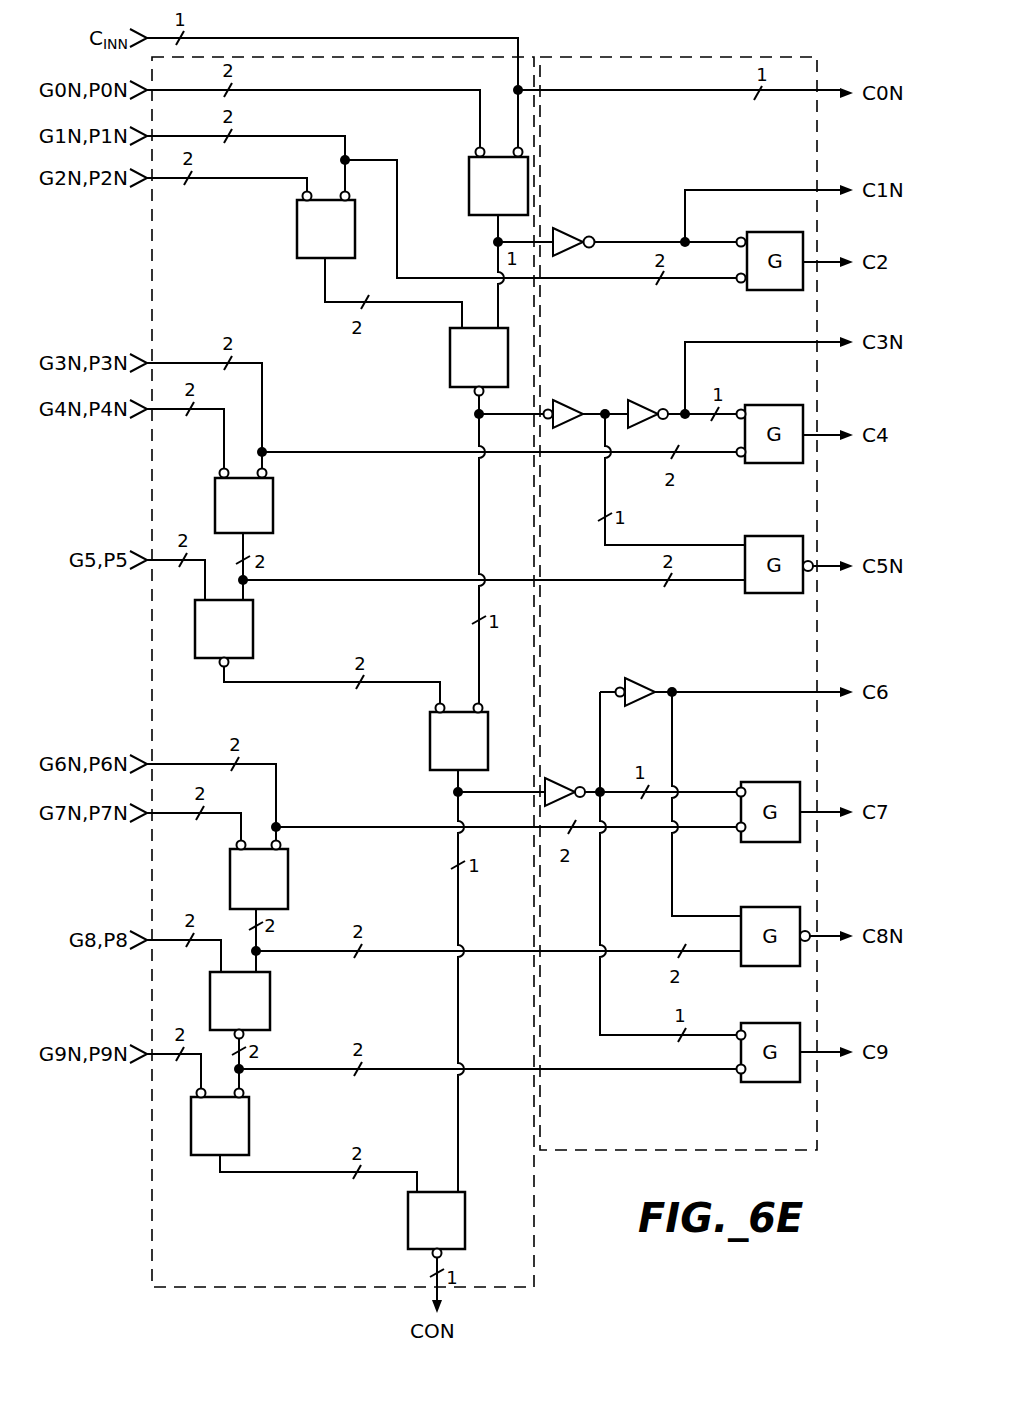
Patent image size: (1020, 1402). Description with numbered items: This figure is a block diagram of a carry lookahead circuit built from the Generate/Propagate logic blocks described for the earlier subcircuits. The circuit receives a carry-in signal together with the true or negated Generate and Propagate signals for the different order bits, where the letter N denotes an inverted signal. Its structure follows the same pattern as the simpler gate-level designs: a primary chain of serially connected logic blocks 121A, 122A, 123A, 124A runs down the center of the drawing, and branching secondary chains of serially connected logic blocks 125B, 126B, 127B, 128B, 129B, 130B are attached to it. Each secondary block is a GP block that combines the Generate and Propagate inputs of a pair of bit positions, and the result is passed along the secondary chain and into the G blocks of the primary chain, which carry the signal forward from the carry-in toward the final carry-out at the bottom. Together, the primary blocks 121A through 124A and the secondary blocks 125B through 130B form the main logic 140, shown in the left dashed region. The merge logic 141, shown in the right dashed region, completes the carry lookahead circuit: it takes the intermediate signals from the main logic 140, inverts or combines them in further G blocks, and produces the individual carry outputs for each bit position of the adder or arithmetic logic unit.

The logic block 121A is at (528, 185).
The logic block 122A is at (450, 362).
The logic block 123A is at (430, 740).
The logic block 124A is at (408, 1222).
The logic block 125B is at (297, 230).
The logic block 126B is at (273, 503).
The logic block 127B is at (253, 627).
The logic block 128B is at (288, 878).
The logic block 129B is at (270, 1000).
The logic block 130B is at (249, 1122).
The main logic 140 is at (343, 672).
The merge logic 141 is at (678, 603).